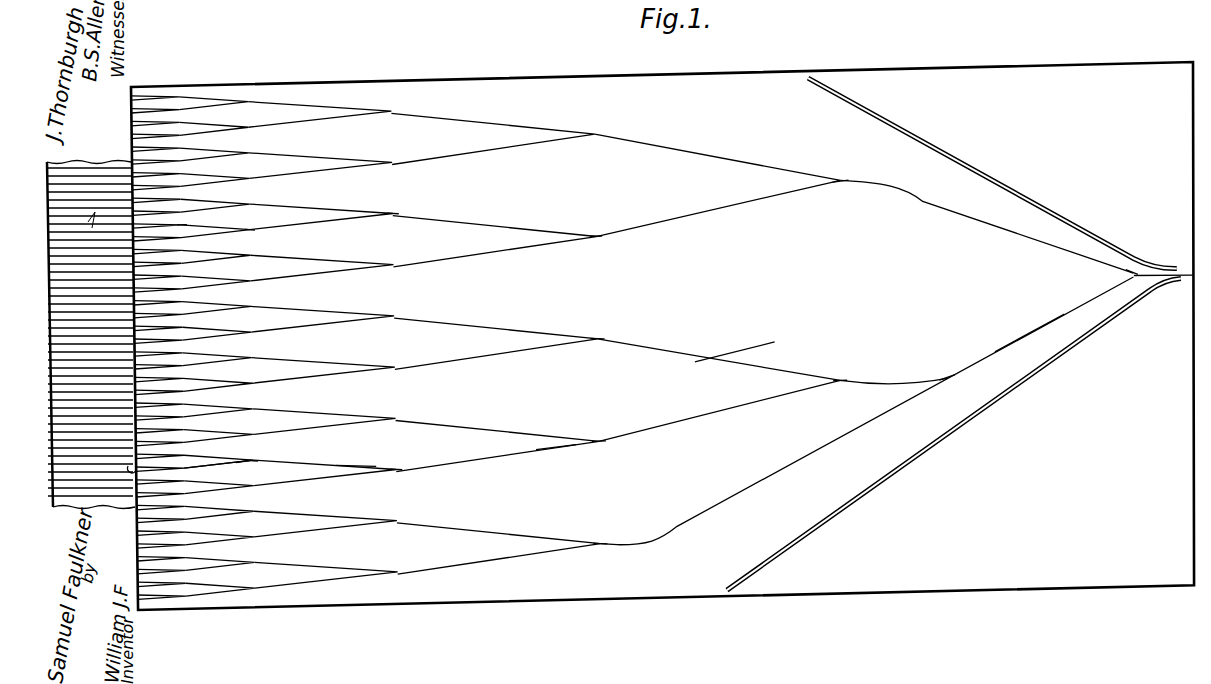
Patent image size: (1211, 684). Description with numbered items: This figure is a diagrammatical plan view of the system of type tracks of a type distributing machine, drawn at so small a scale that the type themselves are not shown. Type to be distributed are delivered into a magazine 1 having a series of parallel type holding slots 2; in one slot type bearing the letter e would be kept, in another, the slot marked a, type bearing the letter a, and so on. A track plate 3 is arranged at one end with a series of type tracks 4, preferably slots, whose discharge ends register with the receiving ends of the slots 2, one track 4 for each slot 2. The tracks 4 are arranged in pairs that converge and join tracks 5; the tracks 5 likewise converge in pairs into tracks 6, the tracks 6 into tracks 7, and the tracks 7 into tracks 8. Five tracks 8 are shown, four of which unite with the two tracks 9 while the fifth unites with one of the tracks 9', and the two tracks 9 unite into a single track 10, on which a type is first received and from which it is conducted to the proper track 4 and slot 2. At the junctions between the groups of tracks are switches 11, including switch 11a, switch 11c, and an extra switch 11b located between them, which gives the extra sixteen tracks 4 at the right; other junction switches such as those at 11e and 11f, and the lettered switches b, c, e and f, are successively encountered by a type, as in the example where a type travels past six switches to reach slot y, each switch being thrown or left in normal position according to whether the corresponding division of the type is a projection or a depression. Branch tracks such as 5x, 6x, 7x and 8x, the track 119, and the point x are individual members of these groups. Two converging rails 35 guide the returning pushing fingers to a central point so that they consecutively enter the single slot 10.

The magazine 1 is at (793, 18).
The slots 2 is at (75, 383).
The track plate 3 is at (931, 455).
The type tracks 4 is at (135, 372).
The tracks 5 is at (217, 374).
The tracks 6 is at (323, 369).
The tracks 7 is at (496, 373).
The tracks 8 is at (866, 334).
The tracks 9 is at (985, 280).
The track 10 is at (1164, 303).
The switches 11 is at (597, 459).
The converging rails 35 is at (803, 73).
The combined thread 119 is at (218, 471).
The switch 11a is at (880, 331).
The extra switch 11b is at (955, 359).
The switch 11c is at (852, 363).
The junction point 11e is at (410, 456).
The junction point 11f is at (272, 448).
The first-stage thread 5x is at (265, 470).
The second-stage thread 6x is at (357, 448).
The third-stage thread 7x is at (556, 463).
The fourth-stage strand 8x is at (735, 394).
The track 9' is at (1029, 331).
The slot for letter a is at (396, 204).
The switch b is at (840, 166).
The switch c is at (602, 219).
The switch e is at (259, 220).
The switch f is at (196, 216).
The fabric edge point x is at (134, 470).
The slot y is at (96, 214).